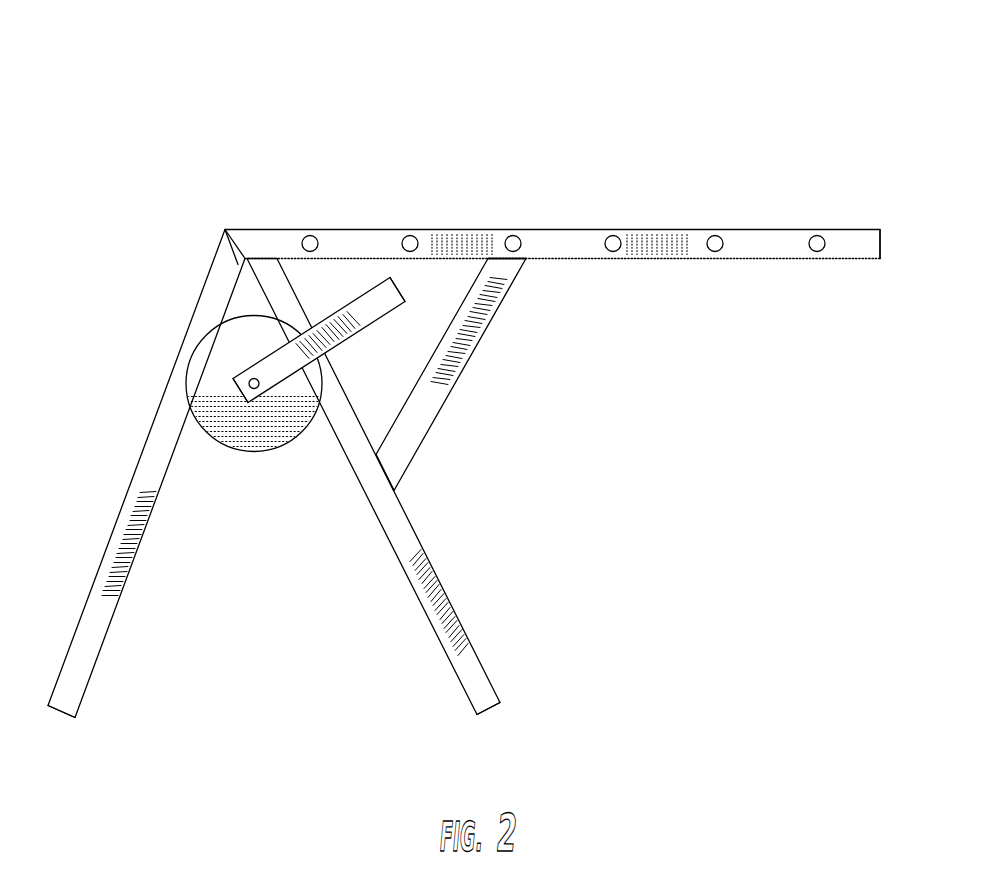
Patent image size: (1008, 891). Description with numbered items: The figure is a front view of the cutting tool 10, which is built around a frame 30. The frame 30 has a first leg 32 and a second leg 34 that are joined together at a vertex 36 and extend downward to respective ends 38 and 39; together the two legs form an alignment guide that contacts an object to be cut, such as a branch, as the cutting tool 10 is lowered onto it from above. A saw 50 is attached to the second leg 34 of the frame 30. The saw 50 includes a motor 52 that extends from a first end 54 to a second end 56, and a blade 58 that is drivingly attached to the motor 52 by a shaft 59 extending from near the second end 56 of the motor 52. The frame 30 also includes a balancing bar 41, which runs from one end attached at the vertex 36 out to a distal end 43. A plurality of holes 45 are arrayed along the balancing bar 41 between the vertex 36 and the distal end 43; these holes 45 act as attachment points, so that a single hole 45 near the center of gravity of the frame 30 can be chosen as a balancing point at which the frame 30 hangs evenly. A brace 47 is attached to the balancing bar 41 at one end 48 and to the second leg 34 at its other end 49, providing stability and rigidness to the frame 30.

The cutting tool 10 is at (570, 108).
The frame 30 is at (76, 434).
The first leg 32 is at (412, 597).
The second leg 34 is at (90, 593).
The vertex 36 is at (222, 236).
The end of first leg 38 is at (63, 717).
The end of second leg 39 is at (493, 708).
The balancing bar 41 is at (473, 228).
The distal end 43 is at (882, 230).
The holes 45 is at (816, 252).
The brace 47 is at (455, 382).
The end of brace 48 is at (526, 259).
The end of brace 49 is at (394, 491).
The saw 50 is at (301, 484).
The motor 52 is at (375, 325).
The first end 54 is at (394, 284).
The second end 56 is at (233, 393).
The blade 58 is at (215, 445).
The shaft 59 is at (254, 390).